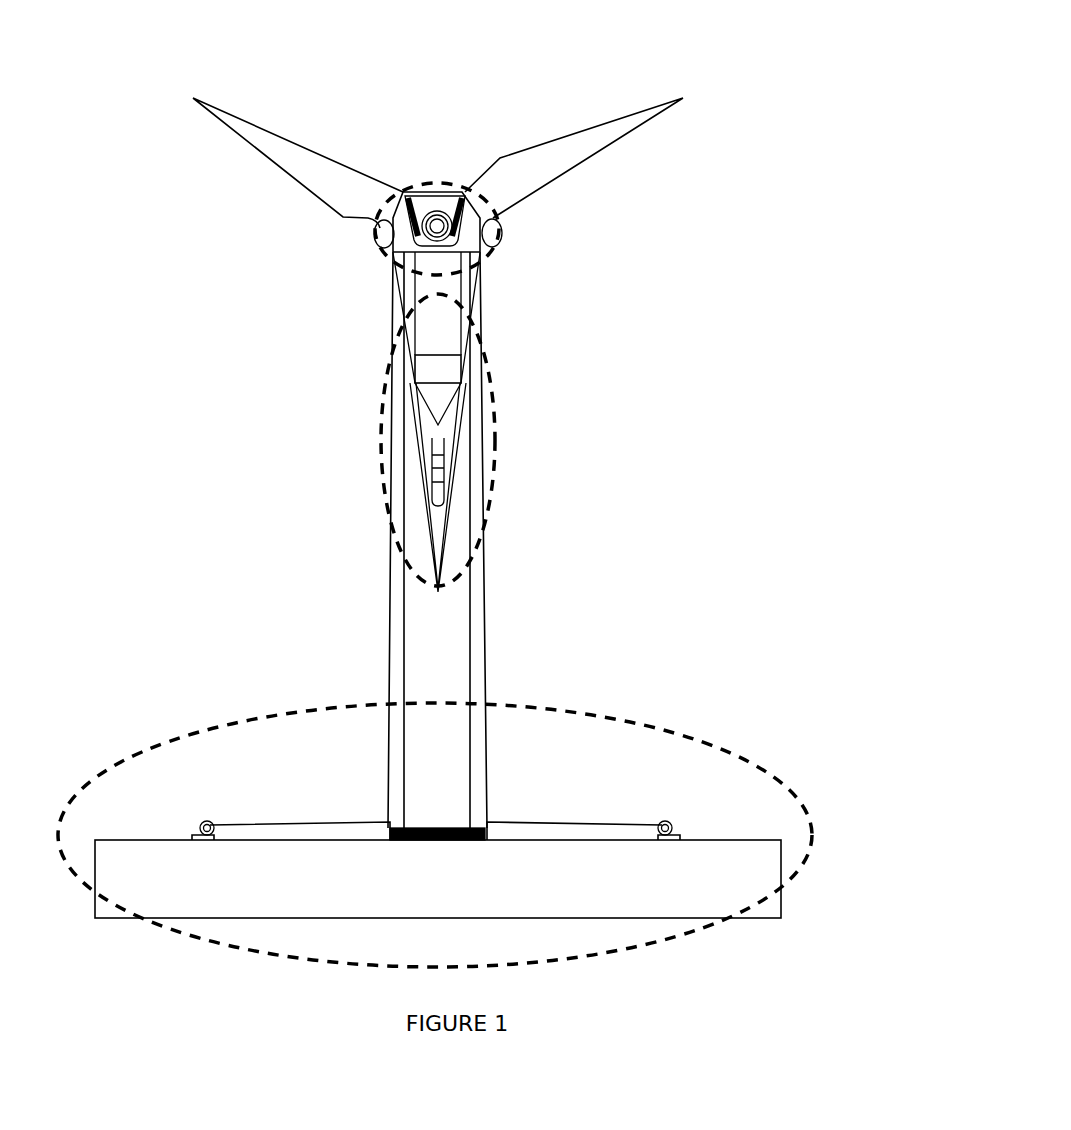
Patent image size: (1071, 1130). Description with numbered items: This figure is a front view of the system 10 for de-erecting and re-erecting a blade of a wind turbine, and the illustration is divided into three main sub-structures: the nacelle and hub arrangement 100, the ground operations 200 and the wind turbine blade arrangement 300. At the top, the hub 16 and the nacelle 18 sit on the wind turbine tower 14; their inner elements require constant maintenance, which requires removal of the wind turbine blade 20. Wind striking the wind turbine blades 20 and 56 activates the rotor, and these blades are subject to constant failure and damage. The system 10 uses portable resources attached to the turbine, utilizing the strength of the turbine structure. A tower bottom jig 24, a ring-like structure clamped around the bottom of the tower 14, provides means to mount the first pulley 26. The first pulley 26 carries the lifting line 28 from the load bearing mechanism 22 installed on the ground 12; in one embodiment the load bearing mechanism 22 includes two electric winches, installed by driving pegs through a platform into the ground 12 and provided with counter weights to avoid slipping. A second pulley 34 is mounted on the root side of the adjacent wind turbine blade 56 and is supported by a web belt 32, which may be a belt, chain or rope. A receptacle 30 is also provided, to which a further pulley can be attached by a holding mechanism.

The system 10 is at (745, 133).
The ground 12 is at (731, 838).
The wind turbine tower 14 is at (470, 634).
The hub 16 is at (432, 185).
The nacelle 18 is at (502, 255).
The wind turbine blade 20 is at (472, 341).
The load bearing mechanism 22 is at (197, 822).
The tower bottom jig 24 is at (436, 826).
The first pulley 26 is at (386, 818).
The lifting line 28 is at (486, 546).
The receptacle 30 is at (447, 487).
The web belt 32 is at (494, 219).
The second pulley 34 is at (374, 244).
The wind turbine blade 56 is at (572, 178).
The nacelle and hub arrangement 100 is at (375, 233).
The ground operations 200 is at (684, 733).
The wind turbine blade arrangement 300 is at (500, 455).